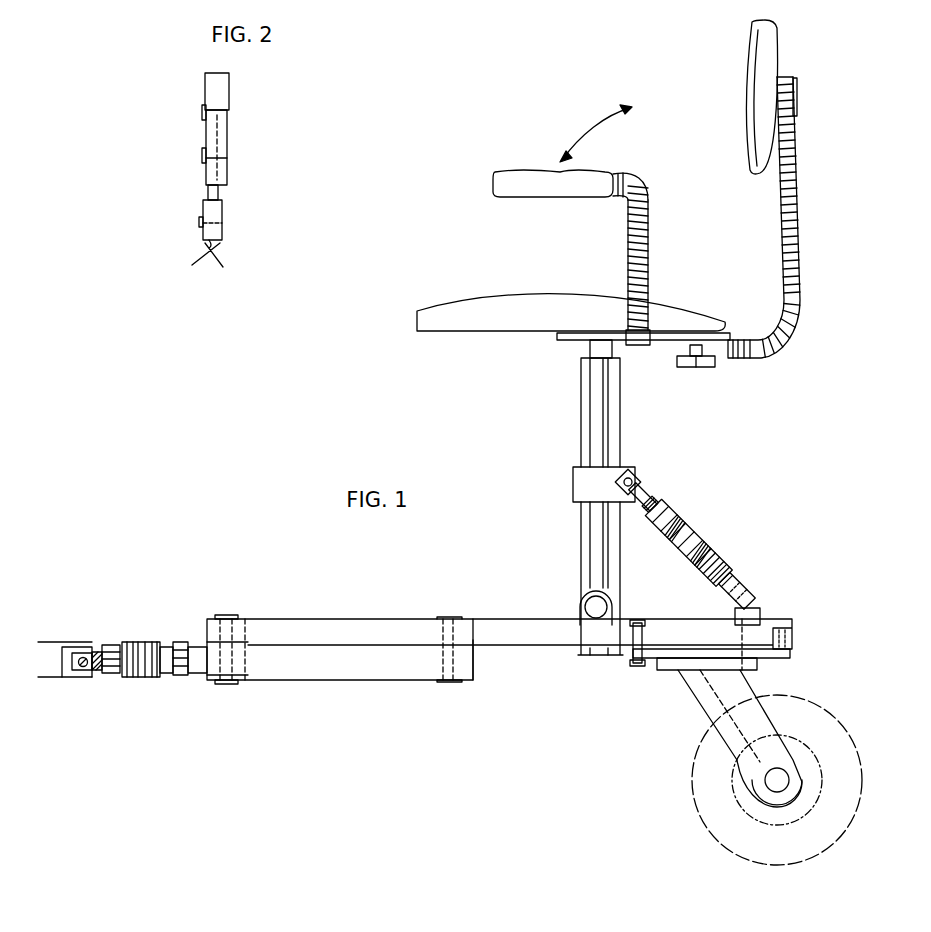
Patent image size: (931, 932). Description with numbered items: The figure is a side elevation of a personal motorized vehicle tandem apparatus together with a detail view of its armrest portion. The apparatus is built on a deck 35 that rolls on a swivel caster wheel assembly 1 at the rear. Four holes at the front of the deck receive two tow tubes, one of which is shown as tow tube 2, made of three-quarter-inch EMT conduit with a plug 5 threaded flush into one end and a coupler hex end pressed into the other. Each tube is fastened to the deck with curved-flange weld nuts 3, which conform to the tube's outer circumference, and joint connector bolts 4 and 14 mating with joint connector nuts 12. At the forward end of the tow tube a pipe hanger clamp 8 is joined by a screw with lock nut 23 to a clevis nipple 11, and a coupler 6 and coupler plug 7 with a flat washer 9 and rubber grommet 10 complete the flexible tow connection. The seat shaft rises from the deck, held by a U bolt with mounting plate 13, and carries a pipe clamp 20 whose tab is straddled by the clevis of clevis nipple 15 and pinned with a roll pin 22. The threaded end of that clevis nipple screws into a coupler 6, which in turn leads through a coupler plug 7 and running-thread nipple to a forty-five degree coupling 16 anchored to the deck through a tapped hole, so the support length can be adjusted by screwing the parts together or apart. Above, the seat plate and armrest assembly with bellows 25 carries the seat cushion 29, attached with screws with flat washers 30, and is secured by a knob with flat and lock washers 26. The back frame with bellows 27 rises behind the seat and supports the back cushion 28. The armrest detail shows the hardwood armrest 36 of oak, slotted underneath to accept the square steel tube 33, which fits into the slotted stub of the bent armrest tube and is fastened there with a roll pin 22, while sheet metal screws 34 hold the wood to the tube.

In FIG. 1, the swivel caster wheel assembly 1 is at (690, 777).
In FIG. 1, the tow tube 2 is at (337, 681).
In FIG. 1, the weld nut 3 is at (220, 685).
In FIG. 1, the joint connector bolt 4 is at (224, 614).
In FIG. 1, the plug 5 is at (474, 664).
In FIG. 1, the coupler 6 is at (148, 640).
In FIG. 1, the coupler plug 7 is at (112, 675).
In FIG. 1, the pipe hanger clamp 8 is at (47, 640).
In FIG. 1, the flat washer 9 is at (127, 640).
In FIG. 1, the rubber grommet 10 is at (135, 640).
In FIG. 1, the clevis nipple 11 is at (100, 650).
In FIG. 1, the joint connector nut 12 is at (590, 656).
In FIG. 1, the U bolt with mounting plate 13 is at (578, 607).
In FIG. 1, the joint connector bolt 14 is at (639, 622).
In FIG. 1, the clevis nipple 15 is at (661, 503).
In FIG. 1, the forty-five degree coupling 16 is at (762, 613).
In FIG. 1, the pipe clamp 20 is at (563, 486).
In FIG. 2, the roll pin 22 is at (224, 210).
In FIG. 1, the roll pin 22 is at (636, 482).
In FIG. 1, the screw with lock nut 23 is at (62, 680).
In FIG. 2, the seat plate and armrest assembly with bellows 25 is at (224, 220).
In FIG. 1, the seat plate and armrest assembly with bellows 25 is at (640, 345).
In FIG. 1, the knob with flat and lock washers 26 is at (715, 367).
In FIG. 1, the back frame with bellows 27 is at (803, 250).
In FIG. 1, the back cushion 28 is at (778, 52).
In FIG. 1, the seat cushion 29 is at (460, 333).
In FIG. 1, the screw with flat washer 30 is at (557, 341).
In FIG. 2, the square steel tube 33 is at (201, 191).
In FIG. 2, the sheet metal screw 34 is at (206, 122).
In FIG. 1, the deck 35 is at (355, 620).
In FIG. 2, the hardwood armrest 36 is at (231, 120).